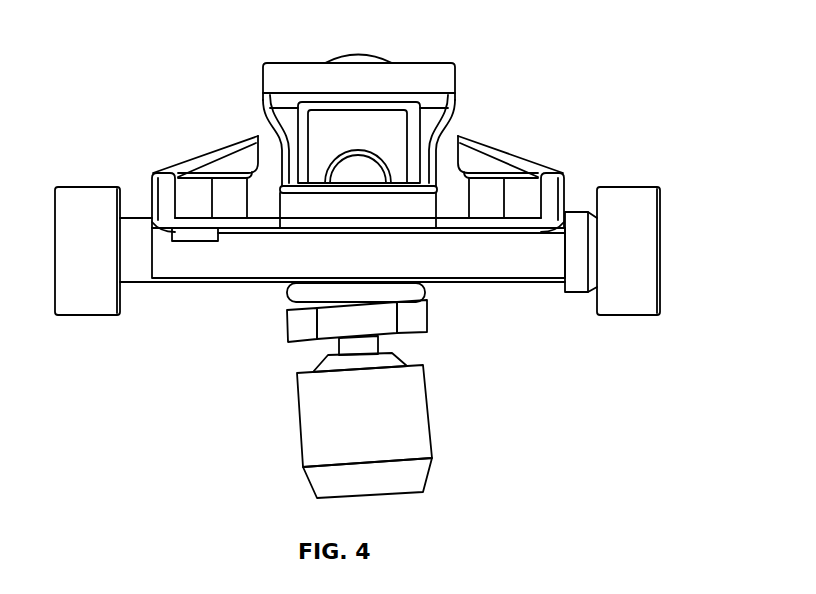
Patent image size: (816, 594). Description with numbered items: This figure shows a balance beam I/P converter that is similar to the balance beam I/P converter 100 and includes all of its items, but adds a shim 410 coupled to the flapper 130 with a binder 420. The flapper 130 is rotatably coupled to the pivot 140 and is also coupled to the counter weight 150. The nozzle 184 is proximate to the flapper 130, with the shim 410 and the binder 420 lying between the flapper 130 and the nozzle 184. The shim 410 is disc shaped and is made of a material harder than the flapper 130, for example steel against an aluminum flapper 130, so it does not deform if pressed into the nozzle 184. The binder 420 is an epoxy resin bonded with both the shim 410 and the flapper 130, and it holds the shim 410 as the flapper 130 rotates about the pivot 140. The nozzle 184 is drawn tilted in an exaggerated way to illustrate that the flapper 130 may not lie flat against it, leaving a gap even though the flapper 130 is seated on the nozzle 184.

The balance beam I/P converter 100 is at (655, 54).
The flapper 130 is at (562, 180).
The pivot 140 is at (662, 210).
The counter weight 150 is at (357, 56).
The nozzle 184 is at (432, 412).
The shim 410 is at (288, 326).
The binder 420 is at (288, 294).